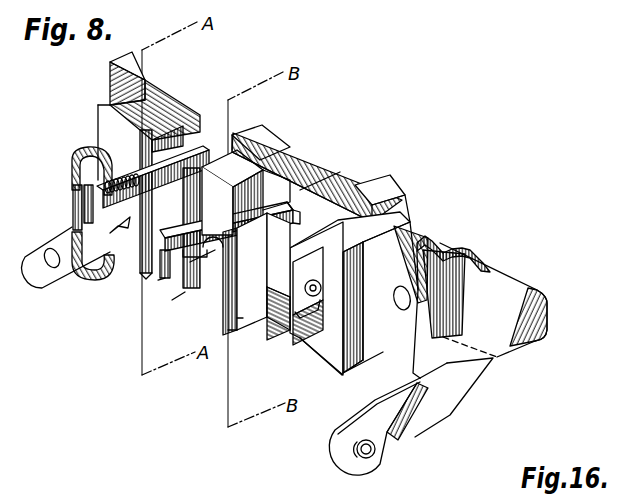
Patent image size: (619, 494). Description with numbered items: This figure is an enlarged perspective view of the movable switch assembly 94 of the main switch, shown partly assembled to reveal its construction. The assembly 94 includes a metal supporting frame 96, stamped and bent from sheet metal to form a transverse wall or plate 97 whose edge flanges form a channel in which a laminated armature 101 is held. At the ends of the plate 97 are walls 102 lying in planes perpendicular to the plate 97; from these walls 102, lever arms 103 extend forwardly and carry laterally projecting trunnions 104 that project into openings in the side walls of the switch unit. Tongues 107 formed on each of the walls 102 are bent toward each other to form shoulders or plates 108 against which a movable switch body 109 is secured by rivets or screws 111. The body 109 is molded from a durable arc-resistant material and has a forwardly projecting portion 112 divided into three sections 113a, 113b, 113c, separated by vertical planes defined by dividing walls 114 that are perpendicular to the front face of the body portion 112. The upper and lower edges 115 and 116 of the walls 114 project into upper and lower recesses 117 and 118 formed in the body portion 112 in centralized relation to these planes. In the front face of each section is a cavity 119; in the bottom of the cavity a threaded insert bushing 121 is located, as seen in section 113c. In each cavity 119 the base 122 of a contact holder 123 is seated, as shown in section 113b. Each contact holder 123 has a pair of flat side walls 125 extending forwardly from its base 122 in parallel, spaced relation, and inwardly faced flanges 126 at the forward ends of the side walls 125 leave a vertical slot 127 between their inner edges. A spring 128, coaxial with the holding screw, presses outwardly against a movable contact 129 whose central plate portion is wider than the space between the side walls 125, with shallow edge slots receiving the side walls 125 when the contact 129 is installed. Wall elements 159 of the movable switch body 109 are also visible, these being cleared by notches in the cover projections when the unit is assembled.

The movable switch assembly 94 is at (435, 240).
The metal supporting frame 96 is at (448, 382).
The transverse wall or plate 97 is at (549, 308).
The laminated armature 101 is at (333, 180).
The walls 102 is at (487, 300).
The lever arms 103 is at (43, 240).
The trunnions 104 is at (370, 451).
The tongues 107 is at (440, 250).
The shoulders or plates 108 is at (470, 265).
The movable switch body 109 is at (370, 192).
The rivets or screws 111 is at (393, 310).
The forwardly projecting portion 112 is at (143, 97).
The section 113a is at (170, 103).
The section 113b is at (217, 232).
The section 113c is at (388, 222).
The dividing walls 114 is at (243, 318).
The upper edge 115 is at (303, 203).
The lower edge 116 is at (233, 335).
The upper recess 117 is at (187, 143).
The lower recess 118 is at (281, 323).
The cavity 119 is at (310, 338).
The threaded insert bushing 121 is at (385, 212).
The base 122 is at (278, 157).
The contact holder 123 is at (203, 268).
The side walls 125 is at (175, 240).
The flanges 126 is at (158, 280).
The vertical slot 127 is at (180, 293).
The spring 128 is at (100, 145).
The movable contact 129 is at (73, 160).
The wall elements 159 is at (276, 293).